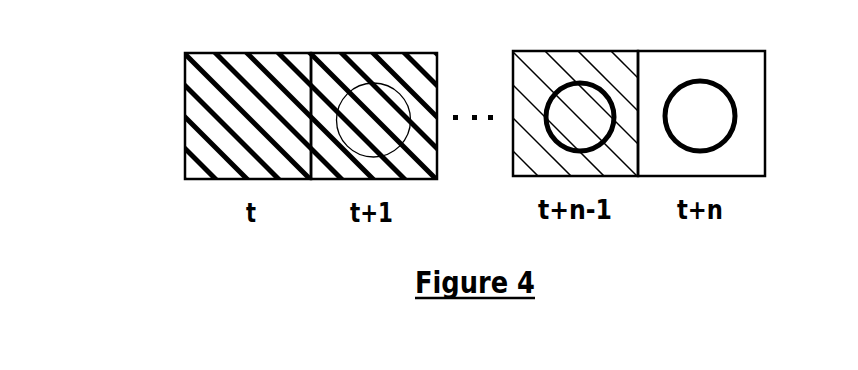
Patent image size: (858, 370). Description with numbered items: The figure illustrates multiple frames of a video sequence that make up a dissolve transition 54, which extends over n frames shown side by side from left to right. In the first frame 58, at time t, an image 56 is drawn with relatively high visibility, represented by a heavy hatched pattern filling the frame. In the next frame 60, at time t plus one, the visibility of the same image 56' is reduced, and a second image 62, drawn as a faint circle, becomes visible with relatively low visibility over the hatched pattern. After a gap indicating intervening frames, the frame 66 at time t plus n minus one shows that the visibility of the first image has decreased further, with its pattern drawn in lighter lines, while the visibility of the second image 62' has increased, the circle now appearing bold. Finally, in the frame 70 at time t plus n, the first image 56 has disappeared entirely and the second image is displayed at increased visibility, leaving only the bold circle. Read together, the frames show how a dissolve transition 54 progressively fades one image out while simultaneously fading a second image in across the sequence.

The dissolve transition 54 is at (160, 57).
The image 56 is at (223, 116).
The image 56' is at (402, 106).
The frame 58 is at (263, 55).
The frame 60 is at (357, 53).
The second image 62 is at (414, 119).
The image 62' is at (606, 80).
The frame 66 is at (558, 50).
The frame 70 is at (767, 110).